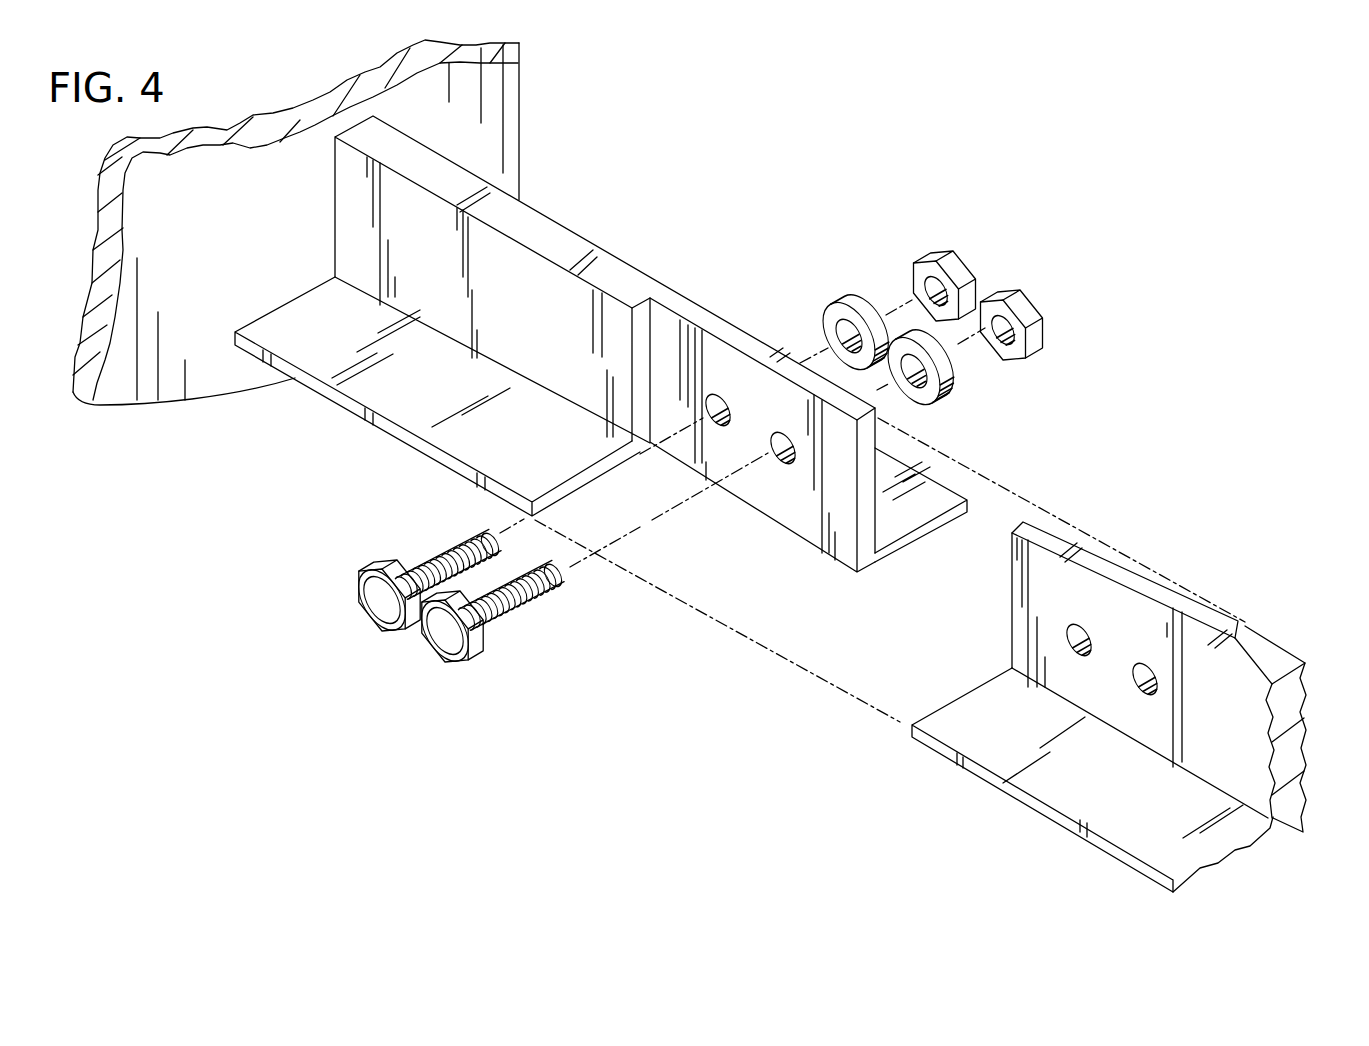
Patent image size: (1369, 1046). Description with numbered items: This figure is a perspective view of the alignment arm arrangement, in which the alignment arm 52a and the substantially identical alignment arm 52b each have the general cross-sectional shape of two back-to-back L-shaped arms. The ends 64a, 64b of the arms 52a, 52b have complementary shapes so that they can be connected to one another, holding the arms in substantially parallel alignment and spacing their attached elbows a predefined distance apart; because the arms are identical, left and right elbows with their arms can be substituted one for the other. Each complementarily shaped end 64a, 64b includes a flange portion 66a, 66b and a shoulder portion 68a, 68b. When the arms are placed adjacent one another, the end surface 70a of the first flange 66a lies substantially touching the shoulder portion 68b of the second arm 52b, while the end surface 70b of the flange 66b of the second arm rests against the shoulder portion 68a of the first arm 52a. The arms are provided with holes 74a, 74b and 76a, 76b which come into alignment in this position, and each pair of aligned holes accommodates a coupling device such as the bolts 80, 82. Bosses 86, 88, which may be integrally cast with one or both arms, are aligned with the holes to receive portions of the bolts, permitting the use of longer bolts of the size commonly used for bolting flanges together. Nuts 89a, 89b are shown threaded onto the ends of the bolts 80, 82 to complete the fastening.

The alignment arm 52a is at (556, 244).
The alignment arm 52b is at (1247, 688).
The end 64a is at (814, 386).
The end 64b is at (1098, 603).
The flange portion 66a is at (738, 367).
The flange portion 66b is at (1040, 606).
The shoulder portion 68a is at (640, 318).
The shoulder portion 68b is at (1232, 618).
The end surface 70a is at (868, 531).
The end surface 70b is at (1015, 499).
The hole 74a is at (733, 410).
The hole 74b is at (1094, 642).
The hole 76a is at (781, 466).
The hole 76b is at (1161, 692).
The bolt 80 is at (469, 548).
The bolt 82 is at (542, 604).
The boss 86 is at (856, 306).
The boss 88 is at (960, 368).
The nut 89a is at (950, 260).
The nut 89b is at (1012, 294).